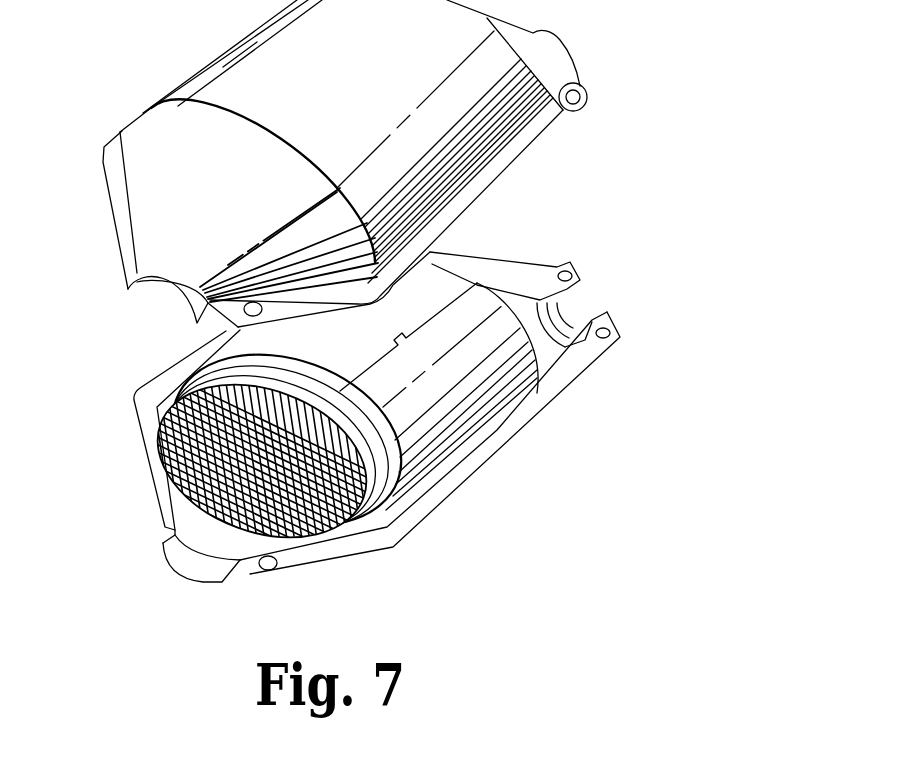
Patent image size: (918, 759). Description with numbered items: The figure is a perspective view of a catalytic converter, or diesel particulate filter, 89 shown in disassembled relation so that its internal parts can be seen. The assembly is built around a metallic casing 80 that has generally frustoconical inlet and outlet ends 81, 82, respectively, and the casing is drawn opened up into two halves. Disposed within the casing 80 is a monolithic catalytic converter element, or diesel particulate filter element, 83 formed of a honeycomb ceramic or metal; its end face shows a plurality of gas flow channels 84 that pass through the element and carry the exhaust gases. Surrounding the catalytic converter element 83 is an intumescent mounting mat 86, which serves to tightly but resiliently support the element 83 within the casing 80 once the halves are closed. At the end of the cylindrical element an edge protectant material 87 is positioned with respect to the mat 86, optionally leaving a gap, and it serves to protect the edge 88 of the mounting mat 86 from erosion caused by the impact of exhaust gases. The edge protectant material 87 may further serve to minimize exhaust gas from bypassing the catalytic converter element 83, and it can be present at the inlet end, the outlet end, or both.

The metallic casing 80 is at (247, 66).
The inlet end 81 is at (188, 567).
The outlet end 82 is at (583, 312).
The catalytic converter element 83 is at (325, 558).
The gas flow channels 84 is at (182, 452).
The intumescent mounting mat 86 is at (468, 390).
The edge protectant material 87 is at (400, 510).
The edge of mounting mat 88 is at (185, 381).
The catalytic converter 89 is at (638, 112).